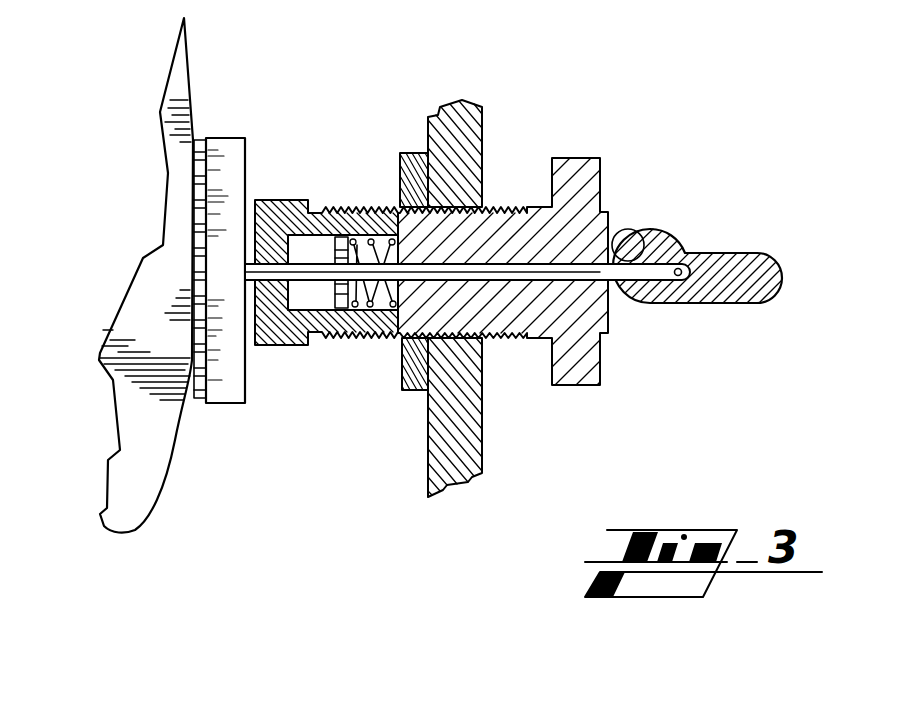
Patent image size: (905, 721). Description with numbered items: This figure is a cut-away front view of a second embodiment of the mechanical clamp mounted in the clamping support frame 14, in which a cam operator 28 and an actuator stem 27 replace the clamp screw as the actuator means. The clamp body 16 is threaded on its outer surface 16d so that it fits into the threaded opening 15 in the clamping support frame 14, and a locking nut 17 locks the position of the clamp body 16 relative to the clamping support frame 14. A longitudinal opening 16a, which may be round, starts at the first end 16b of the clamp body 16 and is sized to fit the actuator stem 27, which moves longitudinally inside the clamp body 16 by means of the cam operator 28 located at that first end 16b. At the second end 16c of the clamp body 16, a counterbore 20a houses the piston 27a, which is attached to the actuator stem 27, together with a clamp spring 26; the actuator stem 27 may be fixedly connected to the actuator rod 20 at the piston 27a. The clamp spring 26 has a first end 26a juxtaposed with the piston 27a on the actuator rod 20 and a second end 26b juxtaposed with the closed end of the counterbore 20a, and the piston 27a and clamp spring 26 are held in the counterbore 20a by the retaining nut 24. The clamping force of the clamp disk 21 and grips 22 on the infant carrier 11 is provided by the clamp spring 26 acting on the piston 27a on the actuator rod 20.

The infant carrier 11 is at (208, 0).
The clamping support frame 14 is at (440, 112).
The threaded opening 15 is at (487, 205).
The clamp body 16 is at (577, 158).
The longitudinal opening 16a is at (647, 228).
The first end 16b is at (612, 217).
The second end 16c is at (325, 338).
The outer surface 16d is at (538, 340).
The locking nut 17 is at (413, 155).
The actuator rod 20 is at (252, 272).
The counterbore 20a is at (323, 296).
The clamp disk 21 is at (228, 407).
The grips 22 is at (200, 383).
The retaining nut 24 is at (298, 345).
The clamp spring 26 is at (377, 210).
The first end 26a is at (300, 202).
The second end 26b is at (360, 207).
The actuator stem 27 is at (586, 272).
The piston 27a is at (370, 320).
The cam operator 28 is at (650, 303).